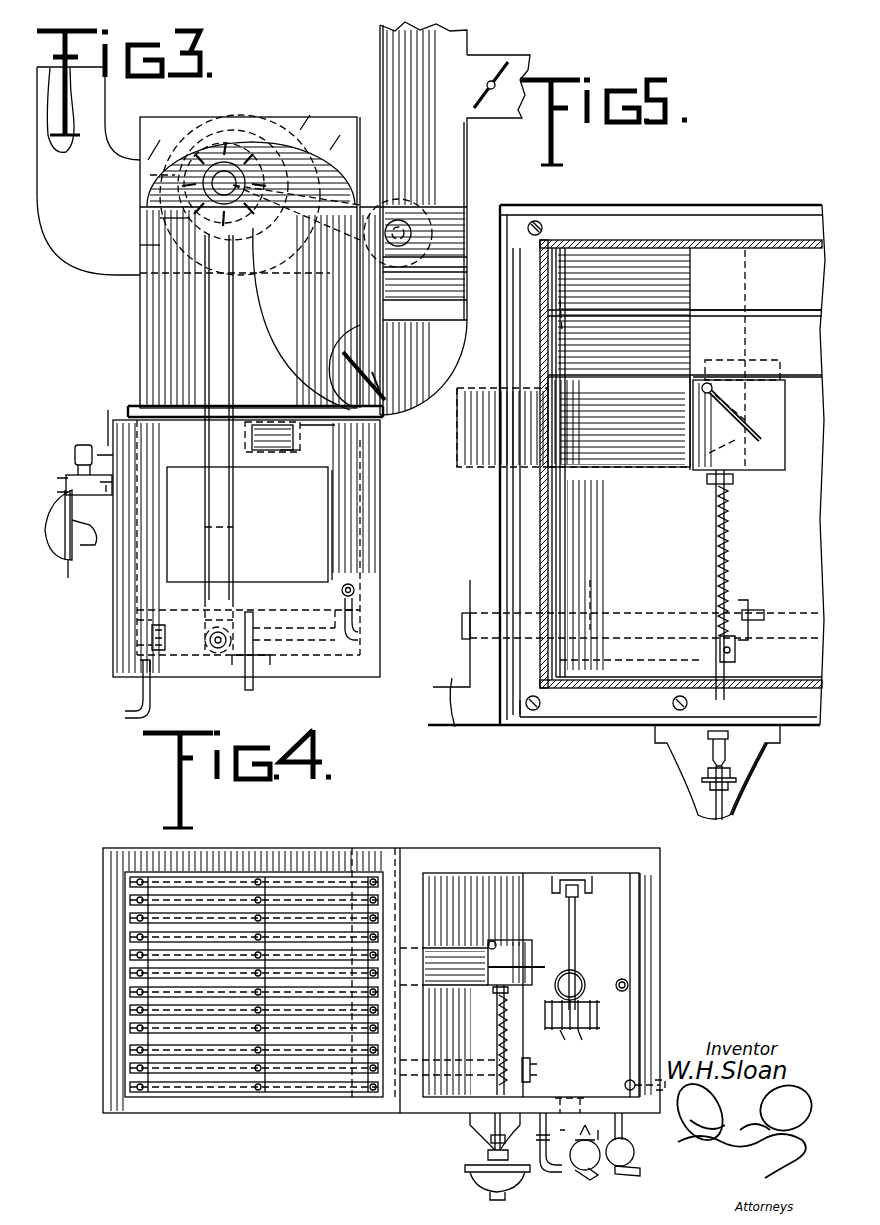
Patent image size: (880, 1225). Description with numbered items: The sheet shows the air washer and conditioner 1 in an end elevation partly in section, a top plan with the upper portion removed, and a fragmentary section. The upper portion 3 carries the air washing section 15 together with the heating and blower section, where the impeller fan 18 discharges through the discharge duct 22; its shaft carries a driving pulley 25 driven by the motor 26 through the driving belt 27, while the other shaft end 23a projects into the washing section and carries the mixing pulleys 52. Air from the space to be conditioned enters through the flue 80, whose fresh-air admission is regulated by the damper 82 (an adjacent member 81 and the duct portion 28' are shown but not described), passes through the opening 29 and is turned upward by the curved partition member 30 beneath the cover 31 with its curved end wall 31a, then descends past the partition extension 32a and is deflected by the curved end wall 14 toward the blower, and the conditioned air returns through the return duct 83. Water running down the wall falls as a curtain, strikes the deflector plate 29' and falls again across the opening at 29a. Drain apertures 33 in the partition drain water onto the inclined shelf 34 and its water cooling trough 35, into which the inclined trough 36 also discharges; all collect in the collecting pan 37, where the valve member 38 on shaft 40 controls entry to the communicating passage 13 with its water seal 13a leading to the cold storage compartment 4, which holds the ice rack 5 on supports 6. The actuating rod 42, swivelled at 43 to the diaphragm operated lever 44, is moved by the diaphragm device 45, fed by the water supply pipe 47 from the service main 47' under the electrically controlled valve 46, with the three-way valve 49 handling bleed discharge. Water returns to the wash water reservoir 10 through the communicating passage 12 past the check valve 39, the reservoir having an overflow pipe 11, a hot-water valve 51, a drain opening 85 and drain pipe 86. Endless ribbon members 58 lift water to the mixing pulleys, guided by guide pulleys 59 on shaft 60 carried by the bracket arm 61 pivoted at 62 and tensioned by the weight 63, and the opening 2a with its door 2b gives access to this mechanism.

In FIG. 3, the air washer and conditioner 1 is at (113, 598).
In FIG. 3, the opening 2a is at (330, 550).
In FIG. 3, the door 2b is at (290, 503).
In FIG. 5, the upper portion 3 is at (712, 240).
In FIG. 5, the cold storage compartment 4 is at (455, 700).
In FIG. 4, the cold storage compartment 4 is at (298, 880).
In FIG. 4, the ice rack 5 is at (222, 880).
In FIG. 4, the supports 6 is at (352, 875).
In FIG. 3, the wash water reservoir 10 is at (137, 620).
In FIG. 4, the wash water reservoir 10 is at (620, 1028).
In FIG. 3, the overflow pipe 11 is at (270, 642).
In FIG. 4, the overflow pipe 11 is at (630, 985).
In FIG. 3, the communicating passage 12 is at (137, 645).
In FIG. 5, the communicating passage 12 is at (612, 622).
In FIG. 4, the communicating passage 12 is at (460, 1065).
In FIG. 5, the communicating passage 13 is at (478, 450).
In FIG. 4, the communicating passage 13 is at (394, 870).
In FIG. 5, the water seal 13a is at (585, 395).
In FIG. 5, the end wall 14 is at (615, 548).
In FIG. 4, the end wall 14 is at (500, 882).
In FIG. 3, the air washing section 15 is at (150, 330).
In FIG. 5, the air washing section 15 is at (640, 692).
In FIG. 3, the impeller fan 18 is at (238, 140).
In FIG. 3, the discharge duct 22 is at (142, 250).
In FIG. 3, the shaft end 23a is at (160, 218).
In FIG. 3, the driving pulley 25 is at (150, 177).
In FIG. 3, the motor 26 is at (408, 208).
In FIG. 3, the driving belt 27 is at (296, 212).
In FIG. 3, the discharge duct 28' is at (444, 293).
In FIG. 3, the opening 29 is at (379, 371).
In FIG. 3, the deflector plate 29' is at (394, 381).
In FIG. 3, the opening 29a is at (405, 416).
In FIG. 3, the partition member 30 is at (268, 362).
In FIG. 3, the cover 31 is at (130, 140).
In FIG. 3, the curved end wall 31a is at (336, 135).
In FIG. 5, the partition extension 32a is at (692, 348).
In FIG. 3, the drain apertures 33 is at (330, 395).
In FIG. 3, the inclined shelf 34 is at (320, 426).
In FIG. 5, the inclined shelf 34 is at (642, 255).
In FIG. 4, the inclined shelf 34 is at (622, 890).
In FIG. 3, the water cooling trough 35 is at (288, 452).
In FIG. 5, the water cooling trough 35 is at (607, 300).
In FIG. 4, the water cooling trough 35 is at (620, 925).
In FIG. 3, the inclined trough 36 is at (188, 414).
In FIG. 5, the inclined trough 36 is at (628, 690).
In FIG. 3, the collecting pan 37 is at (265, 424).
In FIG. 5, the collecting pan 37 is at (775, 455).
In FIG. 4, the collecting pan 37 is at (532, 960).
In FIG. 3, the valve member 38 is at (248, 420).
In FIG. 5, the valve member 38 is at (750, 428).
In FIG. 4, the valve member 38 is at (505, 972).
In FIG. 3, the check valve 39 is at (142, 670).
In FIG. 5, the check valve 39 is at (765, 618).
In FIG. 4, the check valve 39 is at (538, 1068).
In FIG. 4, the shaft 40 is at (494, 943).
In FIG. 3, the actuating rod 42 is at (109, 440).
In FIG. 5, the actuating rod 42 is at (726, 558).
In FIG. 4, the actuating rod 42 is at (496, 1015).
In FIG. 5, the swivel connection 43 is at (722, 762).
In FIG. 4, the swivel connection 43 is at (490, 1142).
In FIG. 3, the diaphragm operated lever 44 is at (68, 486).
In FIG. 5, the diaphragm operated lever 44 is at (738, 780).
In FIG. 4, the diaphragm operated lever 44 is at (488, 1155).
In FIG. 3, the diaphragm device 45 is at (66, 552).
In FIG. 4, the diaphragm device 45 is at (478, 1180).
In FIG. 4, the electrically controlled valve 46 is at (630, 1178).
In FIG. 4, the water supply pipe 47 is at (542, 1157).
In FIG. 4, the service main 47' is at (591, 1171).
In FIG. 4, the three-way valve 49 is at (572, 1115).
In FIG. 3, the electrically controlled valve 51 is at (84, 447).
In FIG. 4, the electrically controlled valve 51 is at (628, 1158).
In FIG. 3, the mixing pulleys 52 is at (212, 244).
In FIG. 3, the endless ribbon members 58 is at (235, 527).
In FIG. 3, the guide pulleys 59 is at (208, 625).
In FIG. 4, the guide pulleys 59 is at (572, 1030).
In FIG. 3, the shaft 60 is at (212, 655).
In FIG. 4, the shaft 60 is at (599, 1013).
In FIG. 3, the bracket arm 61 is at (348, 645).
In FIG. 4, the bracket arm 61 is at (564, 890).
In FIG. 3, the pivot 62 is at (356, 590).
In FIG. 4, the pivot 62 is at (590, 874).
In FIG. 3, the weight 63 is at (262, 670).
In FIG. 4, the weight 63 is at (583, 975).
In FIG. 3, the flue 80 is at (448, 148).
In FIG. 3, the damper bar 81 is at (490, 70).
In FIG. 3, the damper 82 is at (515, 70).
In FIG. 3, the return duct 83 is at (84, 262).
In FIG. 3, the drain opening 85 is at (150, 655).
In FIG. 4, the drain opening 85 is at (630, 1080).
In FIG. 3, the drain pipe 86 is at (125, 715).
In FIG. 4, the drain pipe 86 is at (671, 1064).